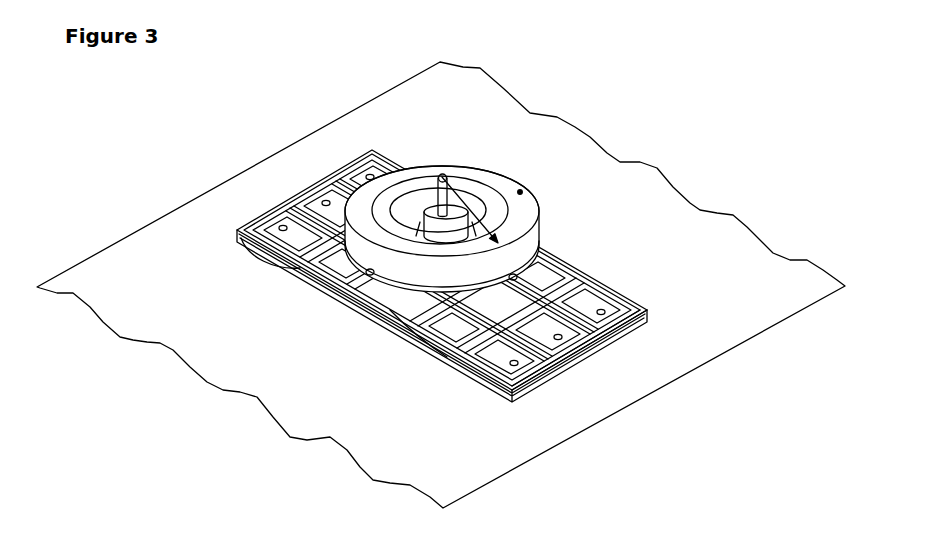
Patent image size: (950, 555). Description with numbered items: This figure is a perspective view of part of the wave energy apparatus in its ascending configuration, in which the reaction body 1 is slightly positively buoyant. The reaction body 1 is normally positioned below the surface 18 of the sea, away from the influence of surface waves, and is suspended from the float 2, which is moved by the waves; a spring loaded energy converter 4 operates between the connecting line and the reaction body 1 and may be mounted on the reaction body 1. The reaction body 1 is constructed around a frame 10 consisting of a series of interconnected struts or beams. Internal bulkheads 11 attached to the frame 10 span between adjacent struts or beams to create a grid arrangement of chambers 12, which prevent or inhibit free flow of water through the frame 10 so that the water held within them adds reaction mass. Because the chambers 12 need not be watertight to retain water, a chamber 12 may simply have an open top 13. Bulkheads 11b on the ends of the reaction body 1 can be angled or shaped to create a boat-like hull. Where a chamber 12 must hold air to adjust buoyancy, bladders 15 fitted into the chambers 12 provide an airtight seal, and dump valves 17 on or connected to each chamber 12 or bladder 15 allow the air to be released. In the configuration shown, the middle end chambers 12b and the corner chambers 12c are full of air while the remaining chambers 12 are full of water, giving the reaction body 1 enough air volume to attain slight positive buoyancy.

The reaction body 1 is at (426, 302).
The float 2 is at (523, 232).
The spring loaded energy converter 4 is at (452, 235).
The frame 10 is at (481, 349).
The internal bulkheads 11 is at (471, 342).
The bulkheads on the ends of the reactor body 11b is at (540, 390).
The chambers 12 is at (342, 270).
The middle end chambers 12b is at (332, 213).
The corner chambers 12c is at (280, 242).
The open top 13 is at (552, 280).
The bladders 15 is at (545, 334).
The dump valves 17 is at (638, 328).
The surface of sea 18 is at (693, 287).